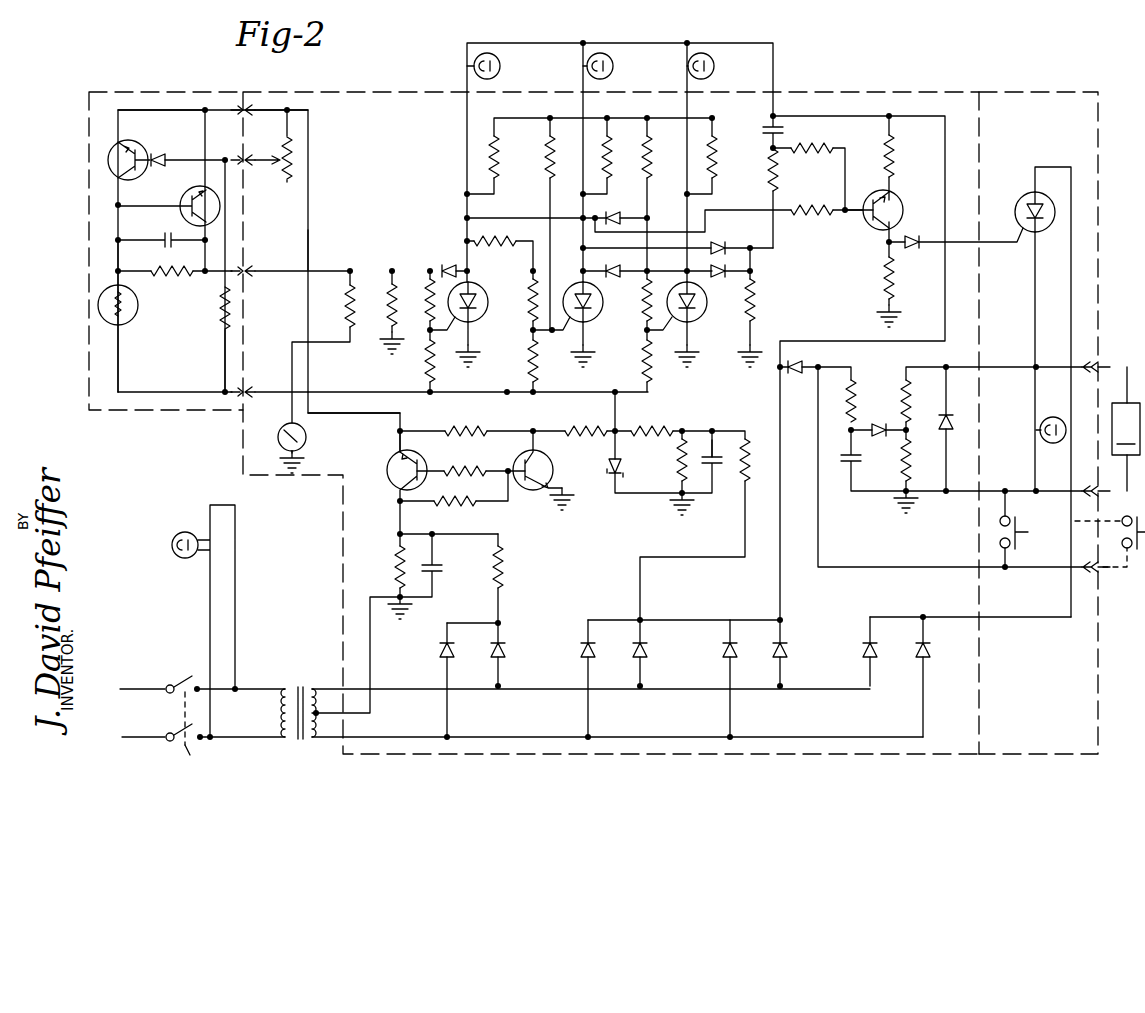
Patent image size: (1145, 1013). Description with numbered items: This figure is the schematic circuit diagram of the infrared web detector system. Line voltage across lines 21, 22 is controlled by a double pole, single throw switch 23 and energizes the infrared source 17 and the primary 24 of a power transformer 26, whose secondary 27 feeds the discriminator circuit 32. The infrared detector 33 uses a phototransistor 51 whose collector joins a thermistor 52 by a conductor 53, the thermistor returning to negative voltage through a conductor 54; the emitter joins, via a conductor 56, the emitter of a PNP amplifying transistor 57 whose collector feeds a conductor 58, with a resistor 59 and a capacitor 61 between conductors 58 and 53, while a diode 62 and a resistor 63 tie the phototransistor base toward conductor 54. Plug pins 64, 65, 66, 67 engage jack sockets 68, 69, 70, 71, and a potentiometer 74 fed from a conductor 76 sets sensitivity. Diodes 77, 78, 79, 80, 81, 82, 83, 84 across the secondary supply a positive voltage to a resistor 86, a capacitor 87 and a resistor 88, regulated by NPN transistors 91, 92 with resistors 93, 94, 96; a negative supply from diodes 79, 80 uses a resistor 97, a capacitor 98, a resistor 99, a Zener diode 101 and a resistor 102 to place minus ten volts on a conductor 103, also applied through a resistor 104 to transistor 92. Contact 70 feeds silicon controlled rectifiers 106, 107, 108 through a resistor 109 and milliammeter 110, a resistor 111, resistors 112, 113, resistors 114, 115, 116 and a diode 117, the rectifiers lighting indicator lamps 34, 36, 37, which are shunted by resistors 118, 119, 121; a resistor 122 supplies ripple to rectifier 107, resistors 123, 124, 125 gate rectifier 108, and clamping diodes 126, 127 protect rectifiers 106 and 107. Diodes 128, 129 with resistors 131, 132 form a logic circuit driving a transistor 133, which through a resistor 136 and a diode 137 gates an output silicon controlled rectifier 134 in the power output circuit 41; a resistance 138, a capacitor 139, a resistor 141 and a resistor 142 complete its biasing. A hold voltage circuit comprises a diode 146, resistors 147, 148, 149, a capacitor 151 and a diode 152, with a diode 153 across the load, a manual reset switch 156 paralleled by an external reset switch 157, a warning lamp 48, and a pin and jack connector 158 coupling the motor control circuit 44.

The source of infrared radiation 17 is at (192, 532).
The line 21 is at (152, 688).
The line 22 is at (142, 762).
The double pole, single throw switch 23 is at (199, 763).
The primary 24 is at (284, 730).
The power transformer 26 is at (312, 683).
The secondary 27 is at (316, 735).
The discriminator circuit 32 is at (910, 70).
The infrared detector 33 is at (85, 140).
The indicator lamp 34 is at (498, 62).
The indicator lamp 36 is at (611, 62).
The indicator lamp 37 is at (713, 62).
The power output circuit 41 is at (1062, 70).
The motor control circuit 44 is at (1126, 429).
The warning lamp 48 is at (1064, 418).
The phototransistor 51 is at (106, 174).
The thermistor 52 is at (97, 315).
The conductor 53 is at (118, 222).
The conductor 54 is at (188, 392).
The conductor 56 is at (170, 110).
The PNP type amplifying transistor 57 is at (183, 200).
The conductor 58 is at (220, 308).
The resistor 59 is at (172, 276).
The capacitor 61 is at (165, 238).
The diode 62 is at (168, 156).
The resistor 63 is at (220, 334).
The pin 64 is at (236, 114).
The pin 65 is at (252, 178).
The pin 66 is at (245, 282).
The pin 67 is at (246, 384).
The socket 68 is at (250, 108).
The socket 69 is at (252, 168).
The socket 70 is at (258, 274).
The socket 71 is at (256, 396).
The potentiometer 74 is at (293, 152).
The conductor 76 is at (312, 252).
The diode 77 is at (440, 656).
The diode 78 is at (505, 656).
The diode 79 is at (586, 642).
The diode 80 is at (646, 654).
The diode 81 is at (728, 650).
The diode 82 is at (786, 654).
The diode 83 is at (877, 648).
The diode 84 is at (930, 654).
The resistor 86 is at (504, 568).
The capacitor 87 is at (438, 566).
The resistor 88 is at (396, 572).
The NPN type transistor 91 is at (395, 480).
The NPN type transistor 92 is at (518, 436).
The resistor 93 is at (458, 508).
The resistor 94 is at (462, 468).
The resistor 96 is at (468, 426).
The resistor 97 is at (750, 462).
The capacitor 98 is at (714, 454).
The resistor 99 is at (680, 472).
The Zener diode 101 is at (608, 466).
The resistor 102 is at (660, 428).
The conductor 103 is at (507, 392).
The resistor 104 is at (600, 428).
The silicon controlled rectifier 106 is at (490, 305).
The silicon controlled rectifier 107 is at (588, 324).
The silicon controlled rectifier 108 is at (710, 311).
The resistor 109 is at (346, 306).
The milliammeter 110 is at (306, 438).
The resistor 111 is at (390, 282).
The resistor 112 is at (430, 280).
The resistor 113 is at (424, 368).
The resistor 114 is at (480, 240).
The resistor 115 is at (528, 312).
The resistor 116 is at (538, 368).
The diode 117 is at (442, 264).
The resistor 118 is at (498, 156).
The resistor 119 is at (608, 142).
The resistor 121 is at (716, 160).
The resistor 122 is at (547, 170).
The resistor 123 is at (650, 160).
The resistor 124 is at (649, 298).
The resistor 125 is at (652, 366).
The clamping diode 126 is at (612, 214).
The clamping diode 127 is at (616, 282).
The diode 128 is at (716, 244).
The diode 129 is at (718, 280).
The resistor 131 is at (758, 304).
The resistor 132 is at (816, 200).
The transistor 133 is at (910, 207).
The output silicon controlled rectifier 134 is at (1017, 188).
The resistor 136 is at (884, 274).
The diode 137 is at (914, 250).
The resistance 138 is at (812, 144).
The capacitor 139 is at (786, 130).
The resistor 141 is at (780, 170).
The resistor 142 is at (895, 152).
The diode 146 is at (798, 360).
The resistor 147 is at (854, 384).
The resistor 148 is at (906, 388).
The resistor 149 is at (900, 496).
The capacitor 151 is at (846, 462).
The diode 152 is at (884, 416).
The diode 153 is at (954, 420).
The manual reset switch 156 is at (1014, 538).
The external reset switch 157 is at (1090, 525).
The pin and jack connector 158 is at (1108, 356).